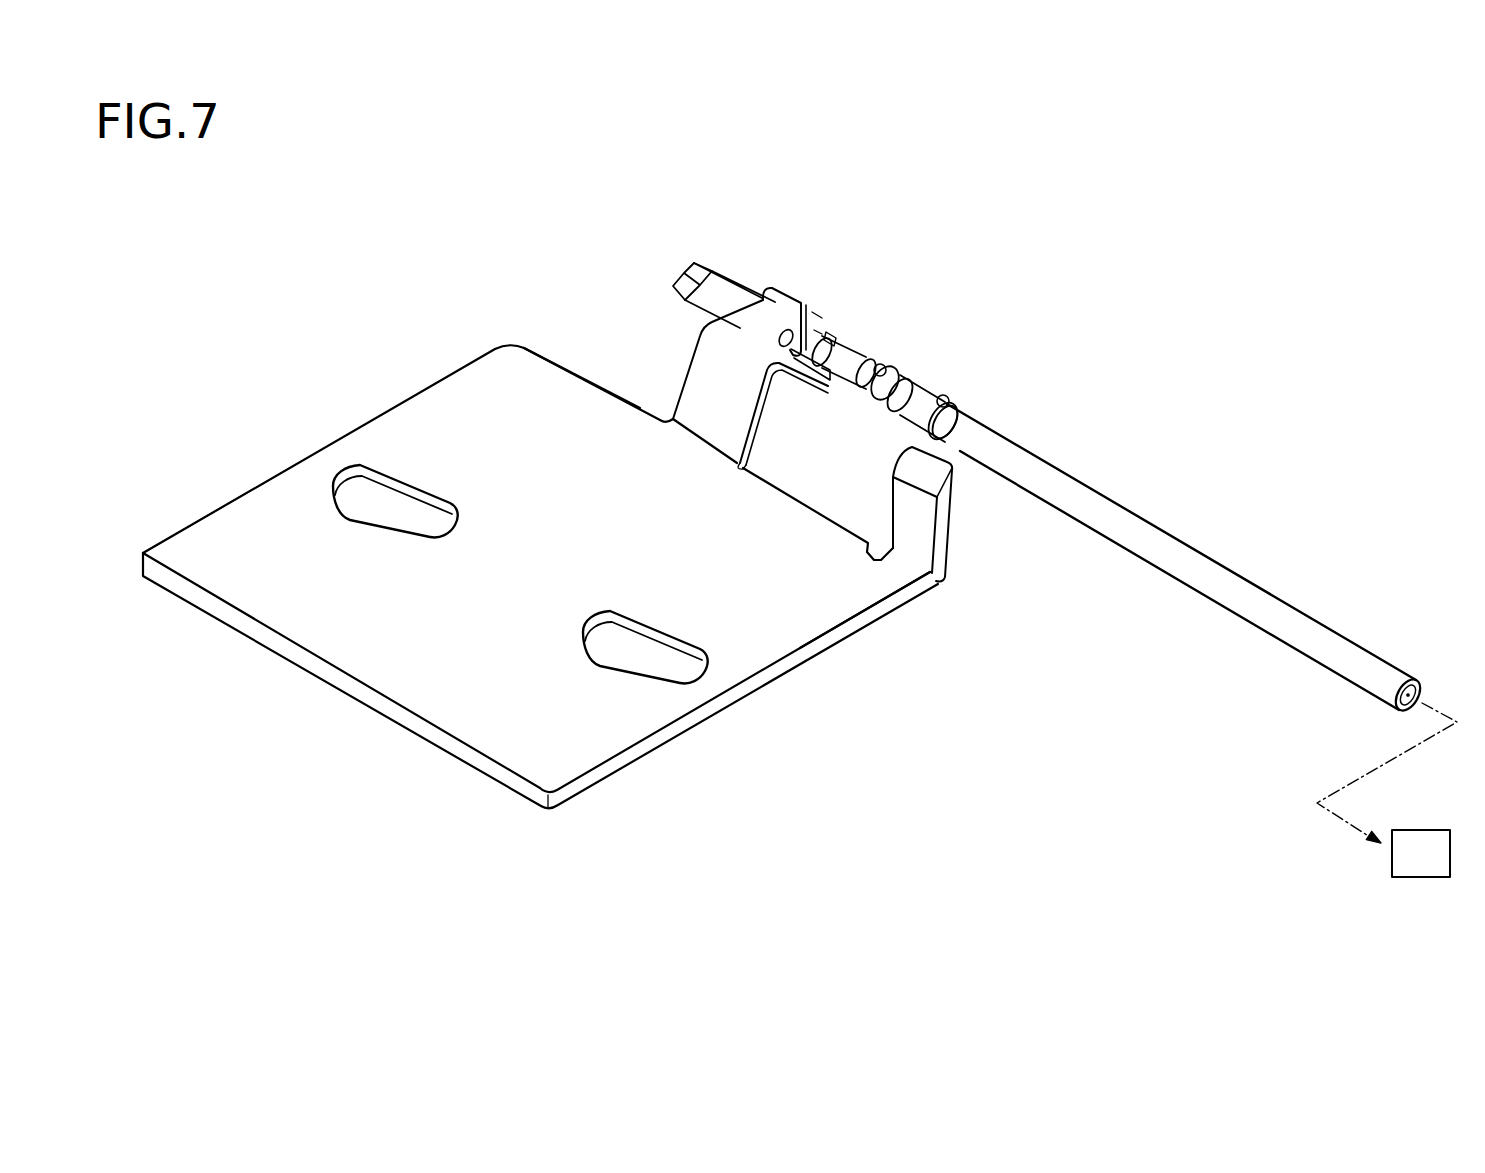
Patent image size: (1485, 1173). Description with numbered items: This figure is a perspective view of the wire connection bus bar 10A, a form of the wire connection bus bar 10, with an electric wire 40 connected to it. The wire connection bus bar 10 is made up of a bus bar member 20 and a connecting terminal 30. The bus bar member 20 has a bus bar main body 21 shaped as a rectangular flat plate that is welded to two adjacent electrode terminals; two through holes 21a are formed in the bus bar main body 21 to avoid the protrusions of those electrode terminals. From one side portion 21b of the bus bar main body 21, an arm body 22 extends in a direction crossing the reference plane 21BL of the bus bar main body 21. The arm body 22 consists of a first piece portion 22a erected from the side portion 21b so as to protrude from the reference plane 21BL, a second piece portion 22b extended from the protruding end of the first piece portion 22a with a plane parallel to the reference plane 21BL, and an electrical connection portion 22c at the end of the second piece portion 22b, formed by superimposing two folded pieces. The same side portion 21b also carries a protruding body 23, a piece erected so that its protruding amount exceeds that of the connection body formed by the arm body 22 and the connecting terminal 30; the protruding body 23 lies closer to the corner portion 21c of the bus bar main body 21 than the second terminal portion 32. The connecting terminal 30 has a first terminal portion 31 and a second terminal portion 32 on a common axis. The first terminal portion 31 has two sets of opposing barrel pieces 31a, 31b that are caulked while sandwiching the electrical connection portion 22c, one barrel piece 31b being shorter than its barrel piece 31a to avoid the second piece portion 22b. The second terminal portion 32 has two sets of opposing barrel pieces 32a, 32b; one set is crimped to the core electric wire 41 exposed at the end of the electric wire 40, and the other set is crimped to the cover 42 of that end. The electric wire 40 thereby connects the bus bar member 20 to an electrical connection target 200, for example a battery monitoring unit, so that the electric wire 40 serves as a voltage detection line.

The wire connection bus bar 10A is at (468, 252).
The wire connection bus bar 10 is at (548, 479).
The bus bar member 20 is at (445, 356).
The bus bar main body 21 is at (667, 733).
The through hole 21a is at (400, 510).
The side portion 21b is at (551, 358).
The corner portion 21c is at (927, 585).
The reference plane 21BL is at (247, 540).
The arm body 22 is at (843, 190).
The first piece portion 22a is at (723, 398).
The second piece portion 22b is at (733, 327).
The electrical connection portion 22c is at (797, 290).
The protruding body 23 is at (922, 515).
The connecting terminal 30 is at (674, 347).
The first terminal portion 31 is at (739, 252).
The barrel piece 31a is at (838, 250).
The barrel piece 31b is at (680, 303).
The second terminal portion 32 is at (956, 355).
The barrel piece 32a is at (863, 377).
The barrel piece 32b is at (890, 350).
The electric wire 40 is at (1185, 524).
The core electric wire 41 is at (832, 337).
The cover 42 is at (1098, 492).
The electrical connection target 200 is at (1423, 877).